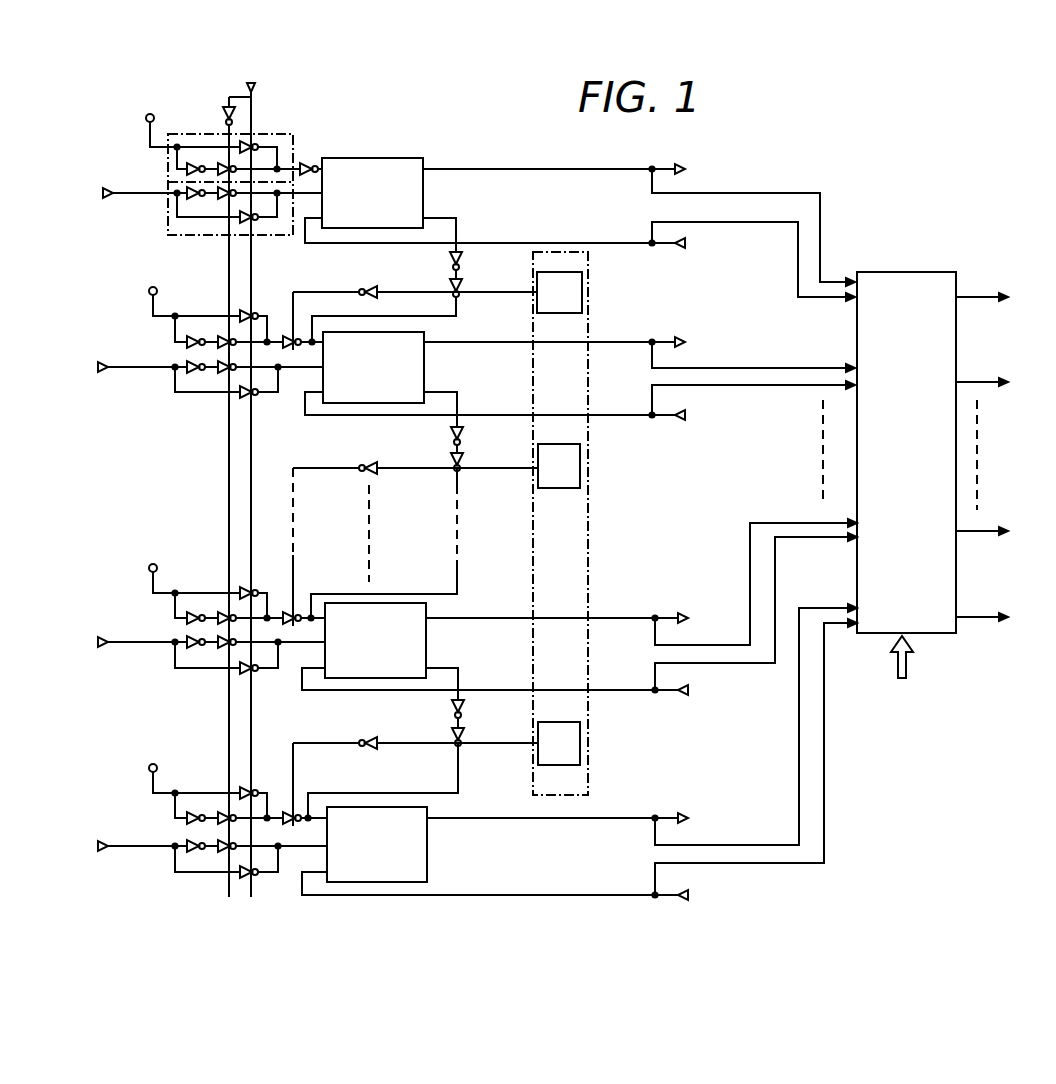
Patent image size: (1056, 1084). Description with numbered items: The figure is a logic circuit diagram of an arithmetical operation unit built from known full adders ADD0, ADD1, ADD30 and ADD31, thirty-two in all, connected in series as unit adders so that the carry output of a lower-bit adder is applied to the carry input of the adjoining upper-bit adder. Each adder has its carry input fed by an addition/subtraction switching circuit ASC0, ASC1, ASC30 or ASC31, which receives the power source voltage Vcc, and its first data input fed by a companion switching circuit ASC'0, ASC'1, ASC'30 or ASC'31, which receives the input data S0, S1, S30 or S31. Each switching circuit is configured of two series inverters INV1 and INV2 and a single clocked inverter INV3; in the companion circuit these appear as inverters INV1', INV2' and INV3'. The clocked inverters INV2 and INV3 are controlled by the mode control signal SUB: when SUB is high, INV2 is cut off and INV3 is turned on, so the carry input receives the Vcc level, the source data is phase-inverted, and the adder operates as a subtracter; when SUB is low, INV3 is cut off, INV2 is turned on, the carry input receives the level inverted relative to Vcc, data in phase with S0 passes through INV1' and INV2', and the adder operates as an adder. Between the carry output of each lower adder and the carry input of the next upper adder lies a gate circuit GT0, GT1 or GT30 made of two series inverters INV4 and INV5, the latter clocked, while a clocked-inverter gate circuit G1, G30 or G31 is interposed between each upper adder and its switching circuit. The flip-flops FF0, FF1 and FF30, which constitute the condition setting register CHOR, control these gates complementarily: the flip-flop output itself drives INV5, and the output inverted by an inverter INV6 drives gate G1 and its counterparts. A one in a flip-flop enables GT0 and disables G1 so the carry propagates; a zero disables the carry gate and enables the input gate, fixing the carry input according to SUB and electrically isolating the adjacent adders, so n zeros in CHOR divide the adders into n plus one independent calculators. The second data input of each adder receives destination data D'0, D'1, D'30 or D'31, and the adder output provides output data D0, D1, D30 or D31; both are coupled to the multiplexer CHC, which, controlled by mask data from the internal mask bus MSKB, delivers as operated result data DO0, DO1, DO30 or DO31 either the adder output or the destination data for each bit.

The mode control signal SUB is at (251, 479).
The power source voltage Vcc is at (143, 441).
The addition/subtraction switching circuit ASC0 is at (300, 146).
The addition/subtraction switching circuit ASC'0 is at (123, 228).
The addition/subtraction switching circuit ASC1 is at (165, 346).
The addition/subtraction switching circuit ASC'1 is at (217, 379).
The addition/subtraction switching circuit ASC30 is at (165, 623).
The addition/subtraction switching circuit ASC'30 is at (220, 655).
The addition/subtraction switching circuit ASC31 is at (165, 825).
The addition/subtraction switching circuit ASC'31 is at (221, 859).
The inverter INV1 is at (158, 159).
The clocked inverter INV2 is at (239, 124).
The clocked inverter INV3 is at (245, 134).
The inverter INV1' is at (126, 176).
The clocked inverter INV2' is at (217, 233).
The clocked inverter INV3' is at (223, 236).
The inverter INV4 is at (492, 238).
The clocked inverter INV5 is at (484, 305).
The inverter INV6 is at (372, 289).
The gate circuit GT0 is at (459, 275).
The gate circuit GT1 is at (448, 424).
The gate circuit GT30 is at (449, 697).
The gate circuit G1 is at (290, 333).
The gate circuit G30 is at (290, 612).
The gate circuit G31 is at (290, 808).
The full adder ADD0 is at (423, 185).
The full adder ADD1 is at (424, 362).
The full adder ADD30 is at (426, 640).
The full adder ADD31 is at (427, 848).
The flip-flop FF0 is at (559, 292).
The flip-flop FF1 is at (559, 466).
The flip-flop FF30 is at (560, 743).
The register CHOR is at (592, 598).
The multiplexer CHC is at (900, 452).
The input data S0 is at (131, 197).
The input data S1 is at (132, 368).
The input data S30 is at (127, 645).
The input data S31 is at (127, 849).
The output data D0 is at (639, 222).
The input data D'0 is at (580, 259).
The output data D1 is at (639, 351).
The input data D'1 is at (580, 405).
The output data D30 is at (641, 582).
The input data D'30 is at (579, 618).
The output data D31 is at (642, 724).
The input data D'31 is at (579, 763).
The operated result data DO0 is at (1006, 298).
The operated result data DO1 is at (1005, 383).
The operated result data DO30 is at (1006, 533).
The operated result data DO31 is at (1006, 618).
The internal mask bus MSKB is at (932, 672).